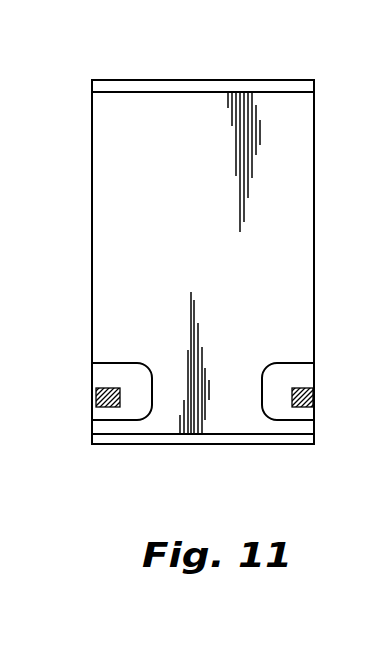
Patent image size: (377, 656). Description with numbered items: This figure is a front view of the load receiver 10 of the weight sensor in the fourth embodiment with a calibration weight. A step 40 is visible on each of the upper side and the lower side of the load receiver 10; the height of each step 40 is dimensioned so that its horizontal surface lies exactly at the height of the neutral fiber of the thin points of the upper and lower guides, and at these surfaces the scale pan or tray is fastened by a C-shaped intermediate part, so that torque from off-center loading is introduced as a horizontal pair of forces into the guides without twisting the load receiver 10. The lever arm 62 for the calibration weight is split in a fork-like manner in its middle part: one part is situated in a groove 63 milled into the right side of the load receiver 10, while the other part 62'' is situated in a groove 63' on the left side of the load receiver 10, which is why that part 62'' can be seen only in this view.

The load receiver 10 is at (110, 197).
The step 40 is at (150, 92).
The groove 63 is at (318, 383).
The groove 63' is at (90, 384).
The lever arm 62 is at (331, 405).
The part of lever arm 62'' is at (84, 405).